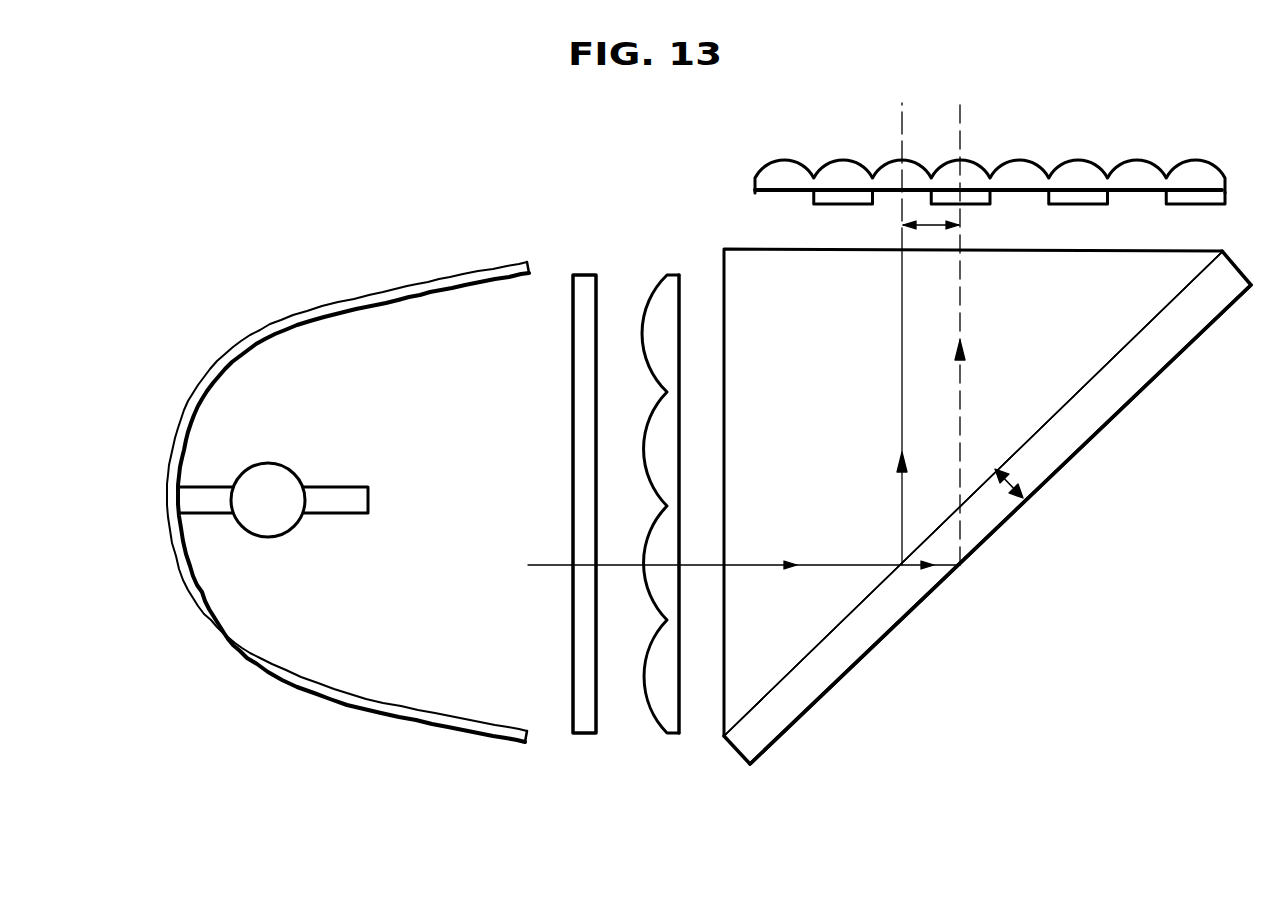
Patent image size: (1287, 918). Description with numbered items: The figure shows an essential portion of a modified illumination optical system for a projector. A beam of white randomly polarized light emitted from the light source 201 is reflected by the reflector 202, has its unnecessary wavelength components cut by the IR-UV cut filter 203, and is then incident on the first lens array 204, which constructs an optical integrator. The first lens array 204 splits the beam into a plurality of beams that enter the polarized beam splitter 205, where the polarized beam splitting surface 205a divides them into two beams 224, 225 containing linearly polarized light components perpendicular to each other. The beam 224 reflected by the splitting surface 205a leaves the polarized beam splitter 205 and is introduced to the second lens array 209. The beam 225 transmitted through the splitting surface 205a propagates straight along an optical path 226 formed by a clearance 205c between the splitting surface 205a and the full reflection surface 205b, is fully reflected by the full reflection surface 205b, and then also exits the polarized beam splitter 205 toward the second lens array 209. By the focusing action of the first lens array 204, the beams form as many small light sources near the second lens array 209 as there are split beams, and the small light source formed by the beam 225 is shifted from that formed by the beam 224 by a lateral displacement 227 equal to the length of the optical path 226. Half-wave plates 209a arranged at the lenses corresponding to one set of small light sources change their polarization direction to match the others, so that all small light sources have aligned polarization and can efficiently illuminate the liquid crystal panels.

The light source 201 is at (258, 485).
The reflector 202 is at (240, 648).
The IR-UV cut filter 203 is at (578, 727).
The first lens array 204 is at (663, 722).
The polarized beam splitter 205 is at (767, 650).
The polarized beam splitting surface 205a is at (828, 632).
The full reflection surface 205b is at (1115, 424).
The clearance 205c is at (997, 483).
The second lens array 209 is at (1192, 175).
The half-wave plates 209a is at (972, 197).
The beam 224 is at (903, 402).
The beam 225 is at (962, 387).
The optical path 226 is at (902, 567).
The lateral displacement 227 is at (940, 226).